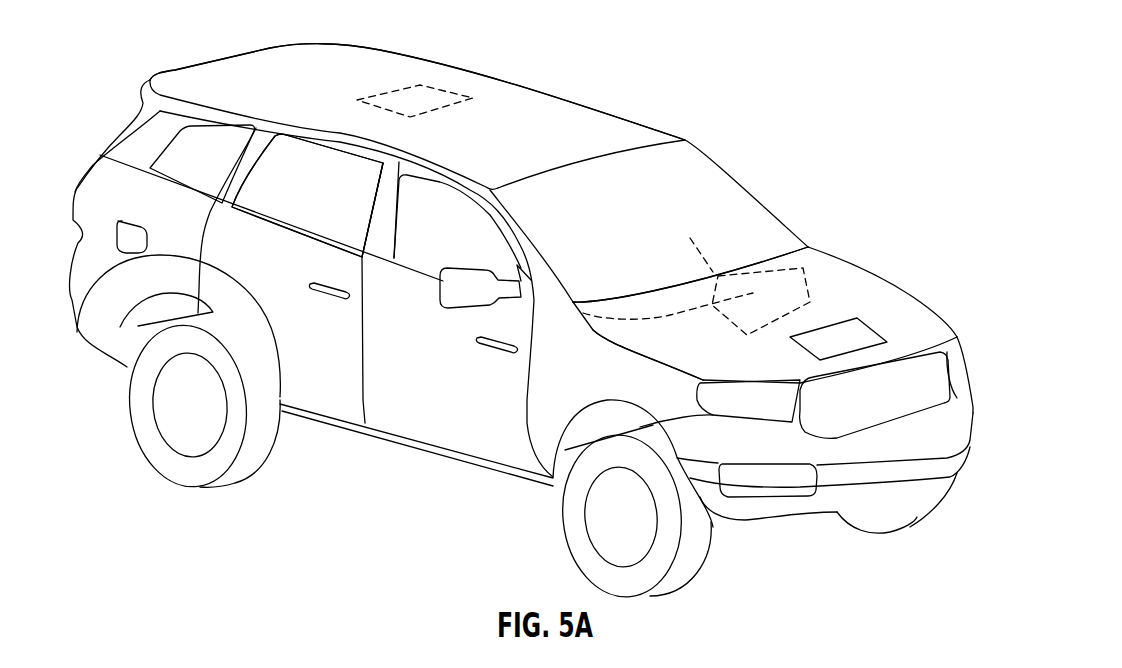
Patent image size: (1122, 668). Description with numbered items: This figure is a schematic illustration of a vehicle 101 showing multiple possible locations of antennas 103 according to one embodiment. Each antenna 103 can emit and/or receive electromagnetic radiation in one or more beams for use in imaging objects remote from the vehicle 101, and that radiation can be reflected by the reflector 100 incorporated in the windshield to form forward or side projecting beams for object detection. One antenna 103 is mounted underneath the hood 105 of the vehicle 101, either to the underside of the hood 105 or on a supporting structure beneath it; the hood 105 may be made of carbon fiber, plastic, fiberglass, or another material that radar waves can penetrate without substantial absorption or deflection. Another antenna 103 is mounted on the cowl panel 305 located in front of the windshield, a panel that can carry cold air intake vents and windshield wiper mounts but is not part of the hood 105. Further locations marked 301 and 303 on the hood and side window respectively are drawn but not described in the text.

The reflector 100 is at (687, 147).
The vehicle 101 is at (748, 69).
The antenna 103 is at (428, 100).
The hood 105 is at (697, 343).
The hood-mounted antenna patch 301 is at (900, 328).
The window glass 303 is at (384, 164).
The cowl panel 305 is at (611, 301).